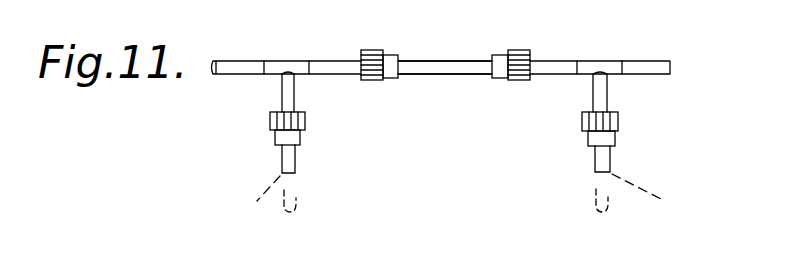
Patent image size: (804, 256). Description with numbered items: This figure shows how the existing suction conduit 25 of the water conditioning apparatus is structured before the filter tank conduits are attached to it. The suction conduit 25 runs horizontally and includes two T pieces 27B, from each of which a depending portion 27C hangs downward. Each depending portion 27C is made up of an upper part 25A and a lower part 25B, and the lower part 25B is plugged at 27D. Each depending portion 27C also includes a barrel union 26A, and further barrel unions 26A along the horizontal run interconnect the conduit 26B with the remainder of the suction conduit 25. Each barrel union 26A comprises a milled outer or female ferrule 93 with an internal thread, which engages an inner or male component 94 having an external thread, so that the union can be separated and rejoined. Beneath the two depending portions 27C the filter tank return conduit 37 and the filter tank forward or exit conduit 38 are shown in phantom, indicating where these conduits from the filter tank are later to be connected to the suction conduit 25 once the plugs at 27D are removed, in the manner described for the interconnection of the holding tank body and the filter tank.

The suction conduit 25 is at (240, 61).
The upper part 25A is at (282, 97).
The lower part 25B is at (282, 159).
The barrel union 26A is at (370, 50).
The conduit 26B is at (448, 61).
The T piece 27B is at (286, 61).
The depending portion 27C is at (295, 81).
The plug 27D is at (462, 196).
The filter tank return conduit 37 is at (300, 202).
The filter tank forward or exit conduit 38 is at (592, 203).
The milled outer or female ferrule 93 is at (305, 118).
The inner or male component 94 is at (500, 78).